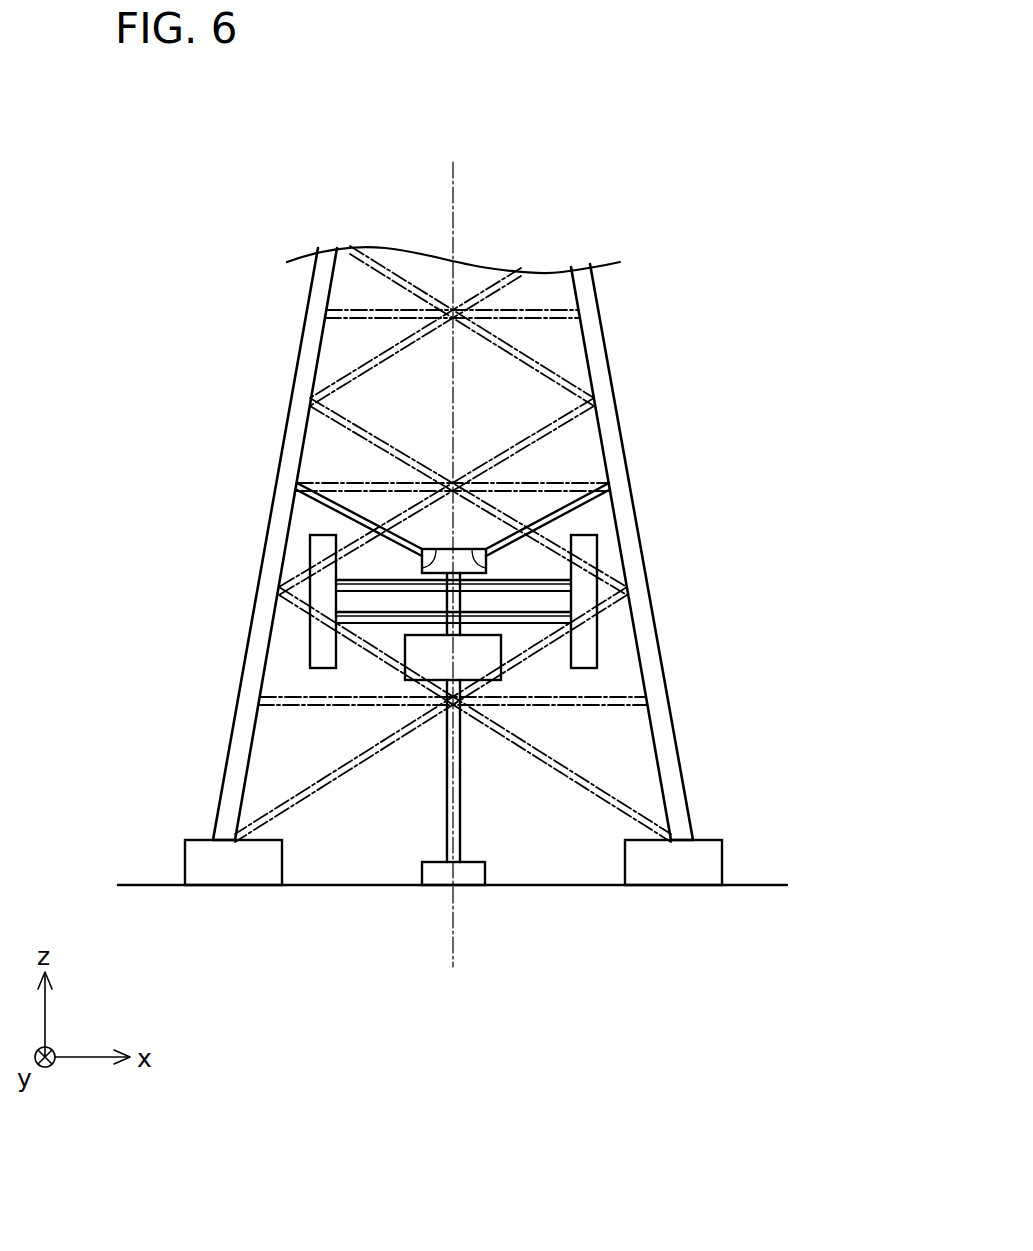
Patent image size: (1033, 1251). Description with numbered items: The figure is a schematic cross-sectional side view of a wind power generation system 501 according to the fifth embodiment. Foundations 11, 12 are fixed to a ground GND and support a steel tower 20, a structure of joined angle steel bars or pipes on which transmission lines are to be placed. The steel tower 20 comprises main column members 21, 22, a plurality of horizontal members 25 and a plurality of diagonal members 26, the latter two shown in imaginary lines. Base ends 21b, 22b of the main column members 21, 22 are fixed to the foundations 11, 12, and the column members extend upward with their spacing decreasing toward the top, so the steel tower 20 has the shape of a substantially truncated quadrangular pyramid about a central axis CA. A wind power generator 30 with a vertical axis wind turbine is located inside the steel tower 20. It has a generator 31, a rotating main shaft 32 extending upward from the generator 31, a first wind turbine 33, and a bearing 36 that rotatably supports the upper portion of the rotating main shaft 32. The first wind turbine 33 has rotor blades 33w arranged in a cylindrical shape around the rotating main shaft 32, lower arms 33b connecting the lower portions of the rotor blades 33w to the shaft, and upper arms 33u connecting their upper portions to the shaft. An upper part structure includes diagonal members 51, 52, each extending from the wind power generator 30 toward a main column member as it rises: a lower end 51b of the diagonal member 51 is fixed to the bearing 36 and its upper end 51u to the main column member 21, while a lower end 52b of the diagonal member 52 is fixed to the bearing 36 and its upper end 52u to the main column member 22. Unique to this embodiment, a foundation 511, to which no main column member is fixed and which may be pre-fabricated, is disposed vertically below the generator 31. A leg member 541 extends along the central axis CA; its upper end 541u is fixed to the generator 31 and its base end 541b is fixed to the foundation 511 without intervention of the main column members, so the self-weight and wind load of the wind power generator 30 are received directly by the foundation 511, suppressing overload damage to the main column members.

The wind power generation system 501 is at (838, 103).
The central axis CA is at (455, 173).
The steel tower 20 is at (733, 247).
The main column member 21 is at (328, 270).
The main column member 22 is at (583, 284).
The base end 21b is at (219, 842).
The base end 22b is at (685, 843).
The horizontal member 25 is at (372, 308).
The diagonal member 26 is at (376, 360).
The bearing 36 is at (456, 558).
The diagonal member 51 is at (272, 502).
The upper end 51u is at (352, 489).
The lower end 51b is at (418, 556).
The diagonal member 52 is at (637, 500).
The upper end 52u is at (603, 488).
The lower end 52b is at (490, 557).
The wind power generator 30 is at (493, 594).
The generator 31 is at (483, 650).
The rotating main shaft 32 is at (462, 598).
The first wind turbine 33 is at (455, 594).
The upper arm 33u is at (377, 585).
The lower arm 33b is at (383, 618).
The rotor blade 33w is at (320, 542).
The leg member 541 is at (457, 831).
The upper end 541u is at (440, 682).
The base end 541b is at (461, 770).
The foundation 511 is at (438, 880).
The foundation 11 is at (212, 870).
The foundation 12 is at (695, 867).
The ground GND is at (782, 884).